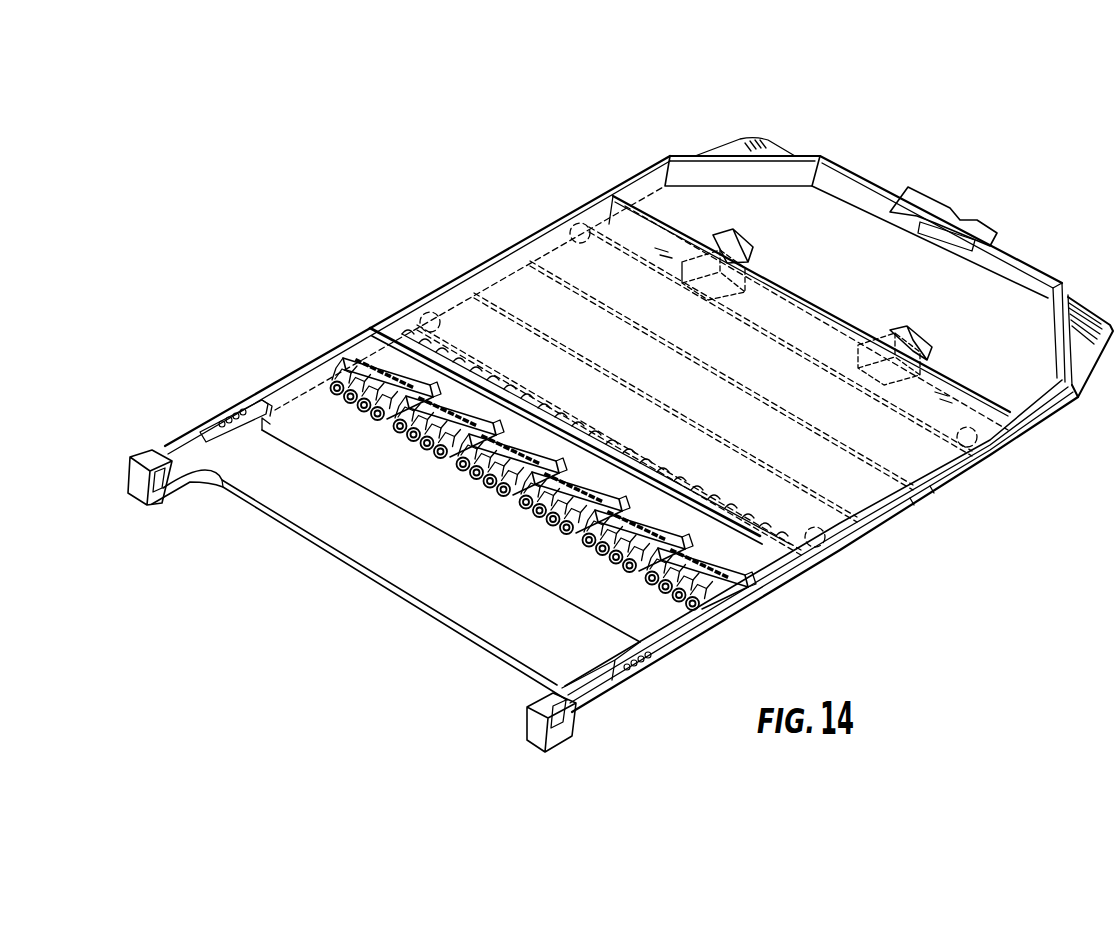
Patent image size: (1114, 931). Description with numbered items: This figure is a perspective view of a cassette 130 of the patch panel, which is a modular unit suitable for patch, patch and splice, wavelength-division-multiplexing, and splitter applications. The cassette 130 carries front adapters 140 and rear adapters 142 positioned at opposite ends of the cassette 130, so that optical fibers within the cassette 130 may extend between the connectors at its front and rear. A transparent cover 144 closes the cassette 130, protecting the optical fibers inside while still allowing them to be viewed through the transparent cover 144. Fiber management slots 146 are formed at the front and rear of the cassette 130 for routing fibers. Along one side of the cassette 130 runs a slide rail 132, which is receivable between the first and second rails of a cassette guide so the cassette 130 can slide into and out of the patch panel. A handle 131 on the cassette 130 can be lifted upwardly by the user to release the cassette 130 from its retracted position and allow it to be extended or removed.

The cassette 130 is at (956, 98).
The handle 131 is at (400, 577).
The slide rail 132 is at (832, 562).
The front adapters 140 is at (517, 492).
The rear adapters 142 is at (908, 325).
The transparent cover 144 is at (513, 297).
The fiber management slots 146 is at (171, 474).